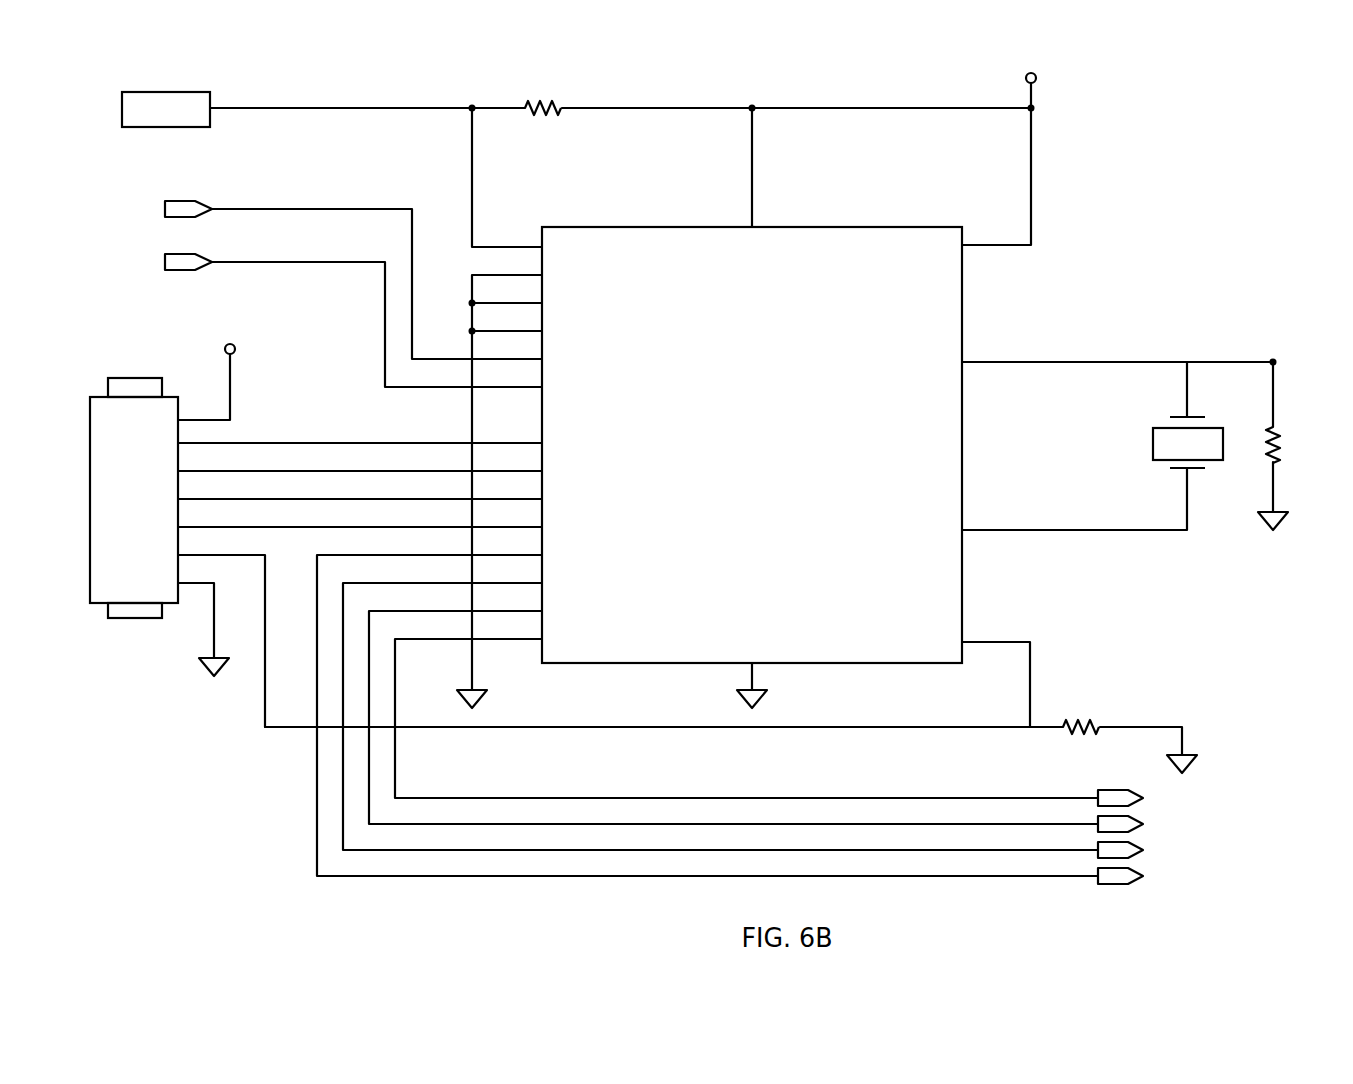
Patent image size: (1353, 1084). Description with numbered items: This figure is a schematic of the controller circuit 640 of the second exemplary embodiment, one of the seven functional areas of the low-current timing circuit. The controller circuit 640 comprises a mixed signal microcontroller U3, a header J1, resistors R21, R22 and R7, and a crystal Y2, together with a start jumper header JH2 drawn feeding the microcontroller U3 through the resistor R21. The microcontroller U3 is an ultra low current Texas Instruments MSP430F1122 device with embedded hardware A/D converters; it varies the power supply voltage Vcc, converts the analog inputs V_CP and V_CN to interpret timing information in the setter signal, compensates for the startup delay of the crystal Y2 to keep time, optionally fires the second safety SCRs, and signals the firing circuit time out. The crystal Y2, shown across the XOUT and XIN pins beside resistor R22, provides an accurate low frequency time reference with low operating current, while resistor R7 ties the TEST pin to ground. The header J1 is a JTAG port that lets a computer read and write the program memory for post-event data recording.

The controller 640 is at (709, 477).
The mixed signal microcontroller U3 is at (748, 446).
The header J1 is at (141, 524).
The STRT jumper header JH2 is at (175, 97).
The resistor R21 is at (545, 133).
The resistor R7 is at (1082, 749).
The resistor R22 is at (1299, 451).
The crystal Y2 is at (1128, 428).